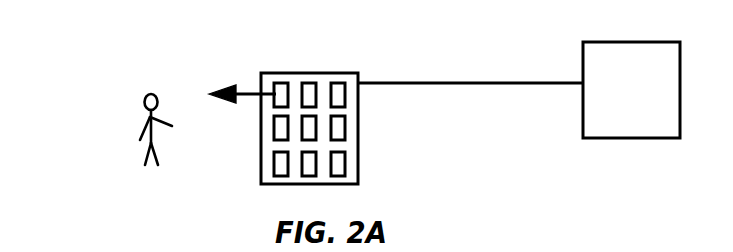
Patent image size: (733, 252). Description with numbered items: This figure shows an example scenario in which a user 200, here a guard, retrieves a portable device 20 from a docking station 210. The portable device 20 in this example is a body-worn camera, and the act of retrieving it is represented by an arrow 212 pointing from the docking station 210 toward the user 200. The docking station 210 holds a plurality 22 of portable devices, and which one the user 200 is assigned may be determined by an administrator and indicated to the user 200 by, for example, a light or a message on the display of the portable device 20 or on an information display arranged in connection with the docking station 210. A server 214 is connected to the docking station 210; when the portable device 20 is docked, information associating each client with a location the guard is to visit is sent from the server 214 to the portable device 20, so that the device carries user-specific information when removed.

The user 200 is at (147, 115).
The docking station 210 is at (358, 110).
The portable device 20 is at (277, 93).
The arrow 212 is at (213, 92).
The plurality of portable devices 22 is at (385, 66).
The server 214 is at (650, 102).